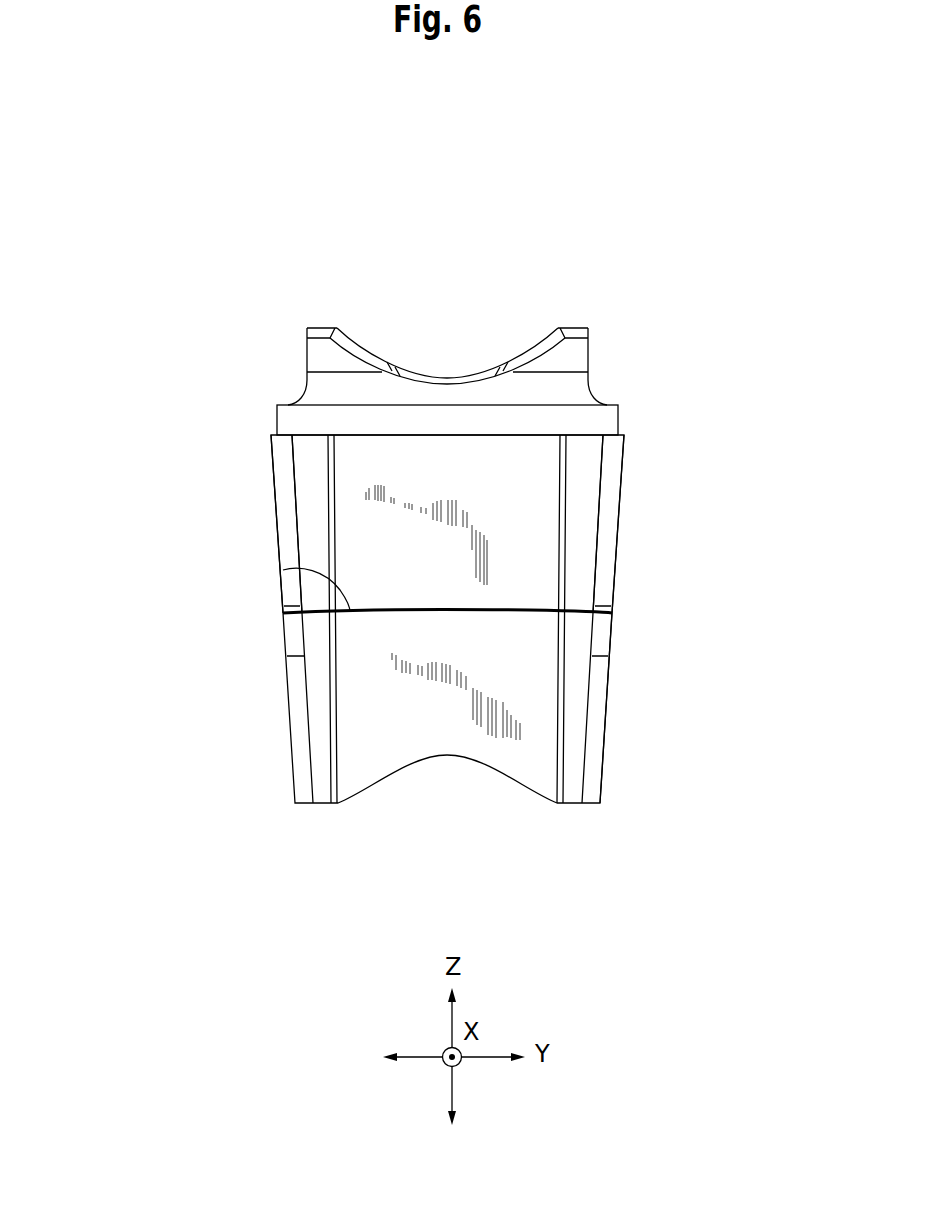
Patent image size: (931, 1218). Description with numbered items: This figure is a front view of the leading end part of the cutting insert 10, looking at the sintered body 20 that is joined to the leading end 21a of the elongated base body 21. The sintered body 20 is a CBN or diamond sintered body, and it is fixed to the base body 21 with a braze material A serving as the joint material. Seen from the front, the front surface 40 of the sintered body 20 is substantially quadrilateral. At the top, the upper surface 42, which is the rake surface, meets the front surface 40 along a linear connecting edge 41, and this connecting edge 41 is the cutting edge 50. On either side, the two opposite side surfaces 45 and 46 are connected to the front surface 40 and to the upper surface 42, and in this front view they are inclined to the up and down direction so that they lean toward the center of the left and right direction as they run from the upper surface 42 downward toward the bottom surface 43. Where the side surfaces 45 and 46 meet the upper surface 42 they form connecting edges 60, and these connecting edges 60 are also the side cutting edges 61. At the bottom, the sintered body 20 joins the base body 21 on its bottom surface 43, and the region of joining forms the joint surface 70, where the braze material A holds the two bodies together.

The cutting insert 10 is at (321, 318).
The sintered body 20 is at (364, 424).
The base body 21 is at (573, 316).
The leading end 21a is at (607, 718).
The front surface 40 is at (500, 509).
The connecting edge 41 is at (407, 433).
The upper surface 42 is at (448, 433).
The bottom surface 43 is at (515, 613).
The side surface 45 is at (620, 508).
The side surface 46 is at (270, 500).
The cutting edge 50 is at (487, 433).
The connecting edge 60 is at (270, 435).
The side cutting edge 61 is at (623, 433).
The joint surface 70 is at (380, 613).
The braze material A is at (293, 570).